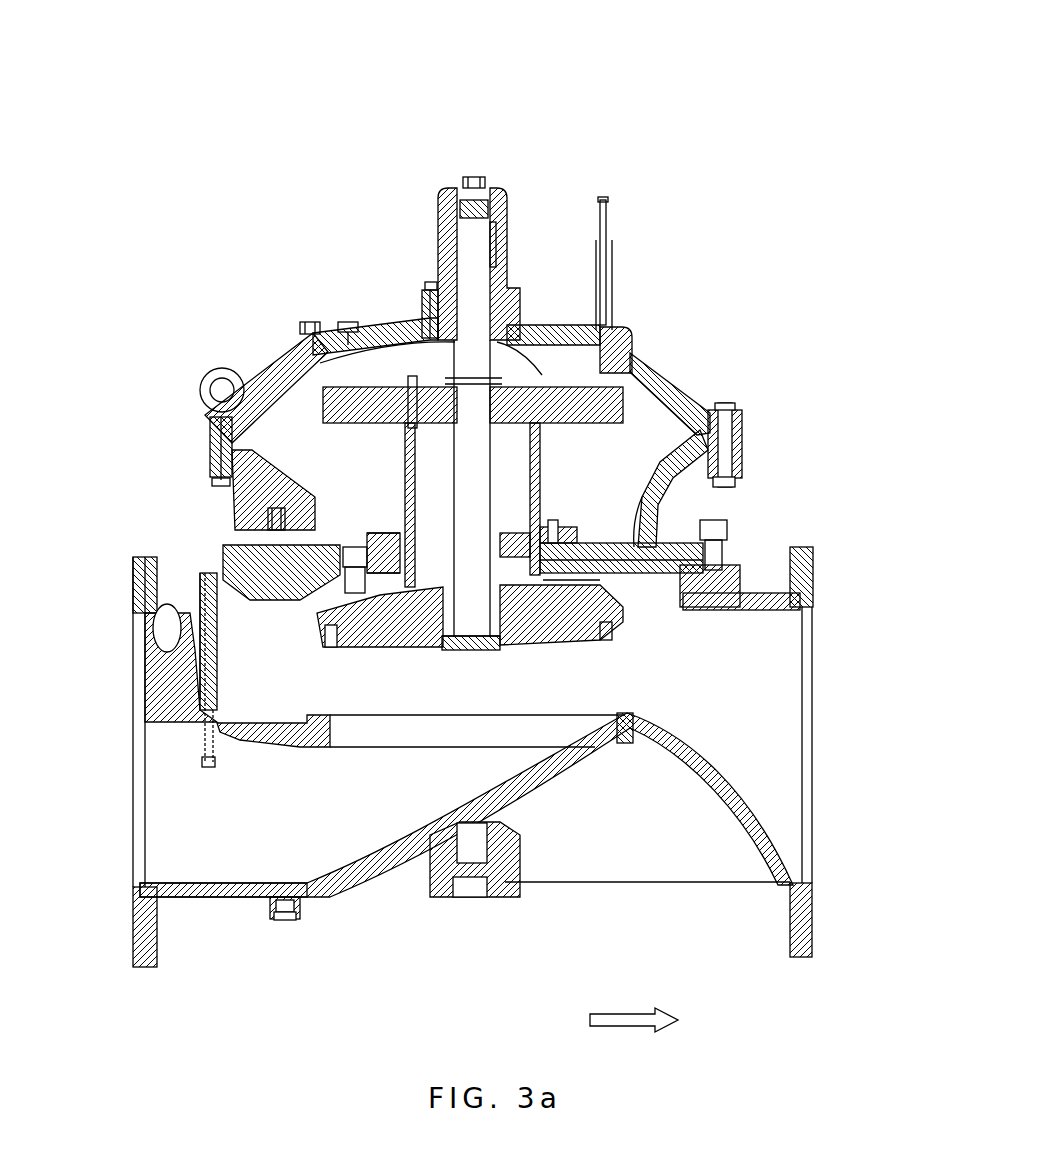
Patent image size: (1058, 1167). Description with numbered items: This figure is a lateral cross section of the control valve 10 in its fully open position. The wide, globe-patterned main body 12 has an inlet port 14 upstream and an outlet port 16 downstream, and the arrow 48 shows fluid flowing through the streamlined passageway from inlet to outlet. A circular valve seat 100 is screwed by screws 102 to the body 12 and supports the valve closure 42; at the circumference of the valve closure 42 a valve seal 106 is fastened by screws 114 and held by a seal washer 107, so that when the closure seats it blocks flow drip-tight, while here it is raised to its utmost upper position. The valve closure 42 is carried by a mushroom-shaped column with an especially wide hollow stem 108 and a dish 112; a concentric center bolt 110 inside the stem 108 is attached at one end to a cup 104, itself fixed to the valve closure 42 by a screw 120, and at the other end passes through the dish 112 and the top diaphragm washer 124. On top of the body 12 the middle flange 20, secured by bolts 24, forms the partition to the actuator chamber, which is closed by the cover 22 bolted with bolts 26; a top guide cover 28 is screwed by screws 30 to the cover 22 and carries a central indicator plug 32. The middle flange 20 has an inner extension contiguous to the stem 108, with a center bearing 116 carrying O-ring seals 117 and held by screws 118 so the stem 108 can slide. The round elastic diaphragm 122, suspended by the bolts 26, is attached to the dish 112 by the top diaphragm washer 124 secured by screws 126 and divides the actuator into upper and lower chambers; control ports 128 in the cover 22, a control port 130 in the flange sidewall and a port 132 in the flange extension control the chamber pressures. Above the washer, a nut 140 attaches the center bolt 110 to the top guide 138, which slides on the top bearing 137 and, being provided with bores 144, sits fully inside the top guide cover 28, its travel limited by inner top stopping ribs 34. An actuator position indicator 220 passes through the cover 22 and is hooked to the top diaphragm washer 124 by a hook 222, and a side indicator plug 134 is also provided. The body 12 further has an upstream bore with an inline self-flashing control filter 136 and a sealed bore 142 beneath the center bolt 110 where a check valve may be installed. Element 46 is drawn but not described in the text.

The control valve 10 is at (660, 47).
The main body 12 is at (687, 833).
The inlet port 14 is at (140, 672).
The outlet port 16 is at (813, 752).
The middle flange 20 is at (673, 522).
The cover 22 is at (650, 387).
The bolts 24 is at (727, 527).
The bolts 26 is at (720, 420).
The top guide cover 28 is at (507, 263).
The screws 30 is at (411, 327).
The central indicator plug 32 is at (477, 182).
The inner top stopping ribs 34 is at (340, 325).
The valve closure 42 is at (600, 638).
The bottom bolt 46 is at (272, 917).
The arrow 48 is at (634, 1005).
The valve seat 100 is at (463, 648).
The screws 102 is at (520, 645).
The cup 104 is at (600, 600).
The valve seal 106 is at (330, 640).
The seal washer 107 is at (327, 628).
The stem 108 is at (302, 437).
The center bolt 110 is at (475, 610).
The dish 112 is at (400, 492).
The screws 114 is at (313, 633).
The center bearing 116 is at (268, 528).
The O-ring seals 117 is at (700, 547).
The screws 118 is at (547, 528).
The screw 120 is at (533, 590).
The diaphragm 122 is at (220, 423).
The top diaphragm washer 124 is at (303, 340).
The screws 126 is at (355, 327).
The control ports 128 is at (313, 333).
The control port 130 is at (268, 513).
The port 132 is at (367, 557).
The side indicator plug 134 is at (610, 325).
The inline self-flashing control filter 136 is at (447, 640).
The top bearing 137 is at (432, 284).
The top guide 138 is at (603, 203).
The nut 140 is at (370, 330).
The sealed bore 142 is at (480, 890).
The bores 144 is at (500, 190).
The actuator position indicator 220 is at (603, 242).
The hook 222 is at (632, 365).